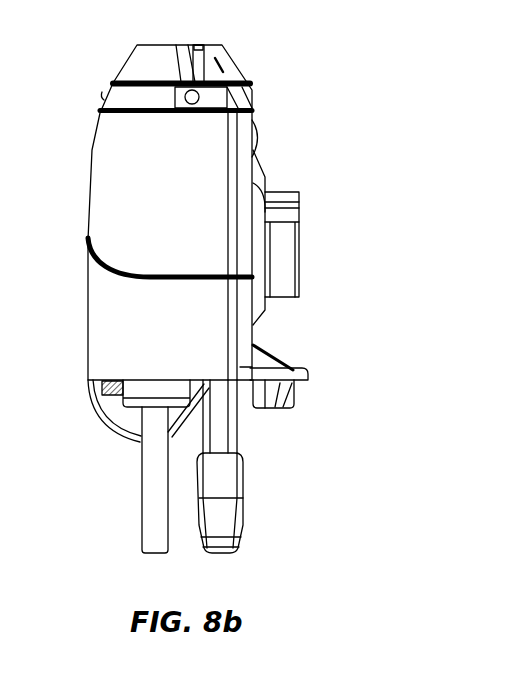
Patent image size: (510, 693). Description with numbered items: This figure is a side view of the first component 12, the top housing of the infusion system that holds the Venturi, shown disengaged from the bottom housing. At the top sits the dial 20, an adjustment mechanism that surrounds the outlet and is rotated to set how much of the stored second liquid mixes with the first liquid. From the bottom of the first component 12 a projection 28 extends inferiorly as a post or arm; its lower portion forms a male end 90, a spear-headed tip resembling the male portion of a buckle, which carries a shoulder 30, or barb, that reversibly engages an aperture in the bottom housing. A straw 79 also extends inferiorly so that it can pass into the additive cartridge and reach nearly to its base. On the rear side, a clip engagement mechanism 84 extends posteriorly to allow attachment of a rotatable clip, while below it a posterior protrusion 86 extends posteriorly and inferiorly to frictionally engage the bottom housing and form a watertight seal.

The first component 12 is at (115, 318).
The dial 20 is at (150, 65).
The projection 28 is at (223, 421).
The shoulder 30 is at (237, 446).
The straw 79 is at (152, 506).
The clip engagement mechanism 84 is at (288, 262).
The posterior protrusion 86 is at (297, 398).
The male end 90 is at (243, 553).